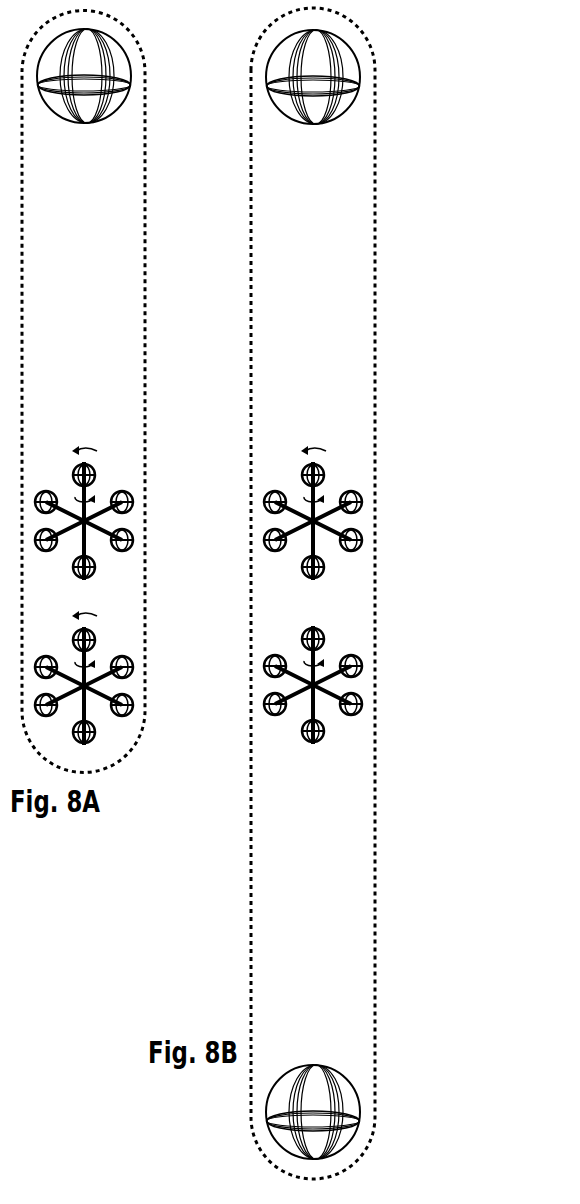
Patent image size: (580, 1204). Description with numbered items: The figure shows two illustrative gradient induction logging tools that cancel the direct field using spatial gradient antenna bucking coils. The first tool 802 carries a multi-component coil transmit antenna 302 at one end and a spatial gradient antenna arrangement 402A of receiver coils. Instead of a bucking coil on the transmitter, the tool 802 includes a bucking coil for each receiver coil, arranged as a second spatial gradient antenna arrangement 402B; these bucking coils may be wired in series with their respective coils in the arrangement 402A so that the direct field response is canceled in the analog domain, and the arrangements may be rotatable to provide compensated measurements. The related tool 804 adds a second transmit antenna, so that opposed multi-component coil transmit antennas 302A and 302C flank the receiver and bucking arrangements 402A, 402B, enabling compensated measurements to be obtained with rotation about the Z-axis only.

In FIG. 8A, the multi-component coil transmit antenna 302 is at (127, 97).
In FIG. 8B, the multi-component coil transmit antenna 302A is at (356, 56).
In FIG. 8B, the multi-component coil transmit antenna 302C is at (357, 1088).
In FIG. 8A, the spatial gradient antenna arrangement 402A is at (100, 688).
In FIG. 8B, the spatial gradient antenna arrangement 402A is at (328, 687).
In FIG. 8A, the second spatial gradient antenna arrangement 402B is at (92, 522).
In FIG. 8B, the second spatial gradient antenna arrangement 402B is at (328, 522).
In FIG. 8A, the gradient induction logging tool 802 is at (148, 208).
In FIG. 8B, the gradient induction logging tool 804 is at (375, 208).